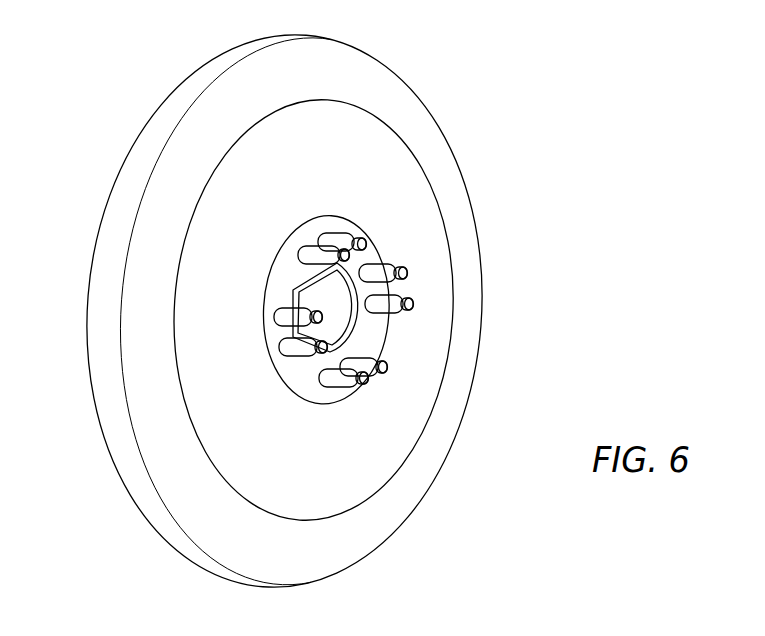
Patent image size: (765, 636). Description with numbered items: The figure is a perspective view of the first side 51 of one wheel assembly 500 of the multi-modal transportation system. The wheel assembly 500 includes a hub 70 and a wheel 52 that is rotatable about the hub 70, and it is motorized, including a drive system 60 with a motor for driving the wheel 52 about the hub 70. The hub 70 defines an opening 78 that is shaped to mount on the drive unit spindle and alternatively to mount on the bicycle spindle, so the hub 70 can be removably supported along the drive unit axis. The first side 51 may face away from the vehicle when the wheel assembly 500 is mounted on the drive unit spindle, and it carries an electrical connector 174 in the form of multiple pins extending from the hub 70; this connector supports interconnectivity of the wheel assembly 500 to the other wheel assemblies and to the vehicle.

The wheel assembly 500 is at (127, 185).
The drive system 60 is at (357, 483).
The wheel 52 is at (378, 95).
The first side 51 is at (385, 428).
The hub 70 is at (365, 342).
The opening 78 is at (338, 320).
The electrical connector 174 is at (390, 266).